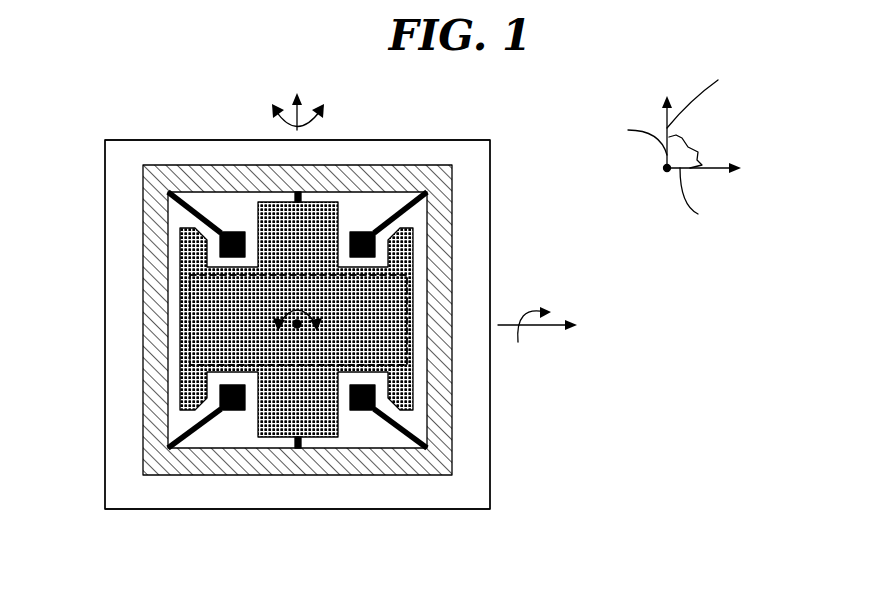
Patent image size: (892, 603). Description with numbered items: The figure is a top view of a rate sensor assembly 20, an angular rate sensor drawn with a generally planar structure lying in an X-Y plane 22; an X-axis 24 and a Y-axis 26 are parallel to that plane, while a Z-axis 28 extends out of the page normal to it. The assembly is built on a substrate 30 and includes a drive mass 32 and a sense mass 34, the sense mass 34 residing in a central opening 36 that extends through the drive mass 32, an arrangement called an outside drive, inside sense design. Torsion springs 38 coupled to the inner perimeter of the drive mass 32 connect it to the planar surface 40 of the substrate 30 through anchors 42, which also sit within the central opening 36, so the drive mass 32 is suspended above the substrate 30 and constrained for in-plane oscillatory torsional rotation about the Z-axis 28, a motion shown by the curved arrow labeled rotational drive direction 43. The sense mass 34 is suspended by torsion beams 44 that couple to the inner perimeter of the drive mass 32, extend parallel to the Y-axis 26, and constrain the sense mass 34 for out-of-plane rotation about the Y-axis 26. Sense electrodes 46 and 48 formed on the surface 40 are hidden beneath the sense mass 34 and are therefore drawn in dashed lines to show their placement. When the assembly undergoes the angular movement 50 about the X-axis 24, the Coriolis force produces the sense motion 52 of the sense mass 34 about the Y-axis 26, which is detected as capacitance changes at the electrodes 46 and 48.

The rate sensor assembly 20 is at (671, 475).
The X-Y plane 22 is at (693, 143).
The X-axis 24 is at (712, 168).
The Y-axis 26 is at (667, 118).
The Z-axis 28 is at (298, 328).
The substrate 30 is at (115, 148).
The drive mass 32 is at (163, 172).
The sense mass 34 is at (268, 213).
The central opening 36 is at (232, 200).
The torsion springs 38 is at (185, 205).
The planar surface 40 is at (111, 505).
The anchors 42 is at (220, 245).
The rotational drive direction 43 is at (305, 307).
The torsion beams 44 is at (303, 197).
The sense electrode 46 is at (190, 326).
The sense electrode 48 is at (407, 340).
The angular movement 50 is at (522, 318).
The sense motion 52 is at (290, 127).